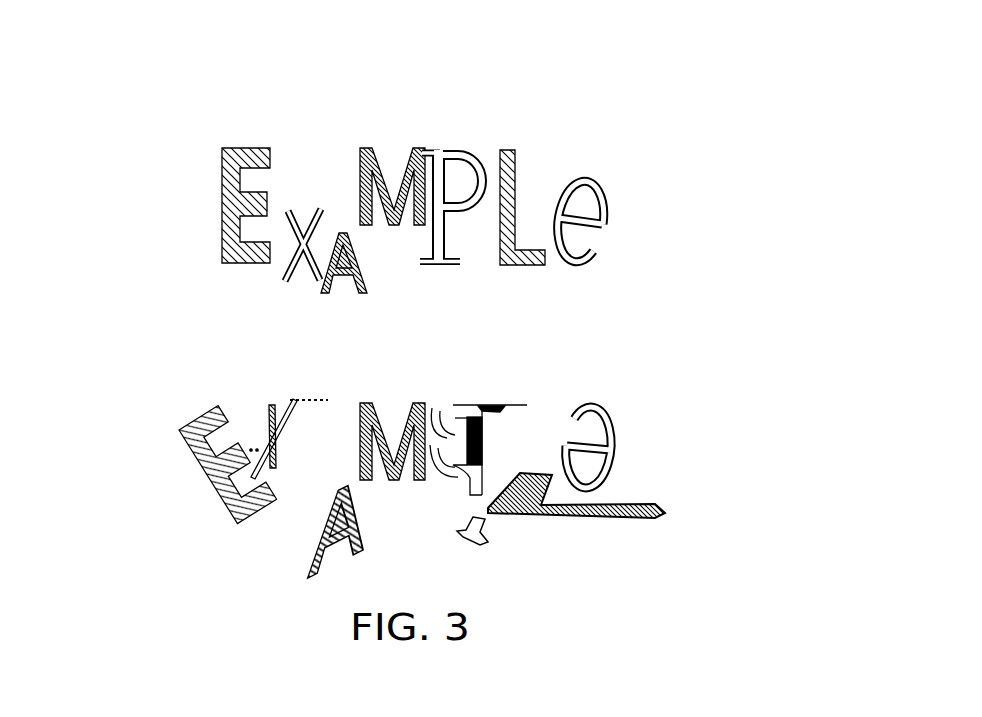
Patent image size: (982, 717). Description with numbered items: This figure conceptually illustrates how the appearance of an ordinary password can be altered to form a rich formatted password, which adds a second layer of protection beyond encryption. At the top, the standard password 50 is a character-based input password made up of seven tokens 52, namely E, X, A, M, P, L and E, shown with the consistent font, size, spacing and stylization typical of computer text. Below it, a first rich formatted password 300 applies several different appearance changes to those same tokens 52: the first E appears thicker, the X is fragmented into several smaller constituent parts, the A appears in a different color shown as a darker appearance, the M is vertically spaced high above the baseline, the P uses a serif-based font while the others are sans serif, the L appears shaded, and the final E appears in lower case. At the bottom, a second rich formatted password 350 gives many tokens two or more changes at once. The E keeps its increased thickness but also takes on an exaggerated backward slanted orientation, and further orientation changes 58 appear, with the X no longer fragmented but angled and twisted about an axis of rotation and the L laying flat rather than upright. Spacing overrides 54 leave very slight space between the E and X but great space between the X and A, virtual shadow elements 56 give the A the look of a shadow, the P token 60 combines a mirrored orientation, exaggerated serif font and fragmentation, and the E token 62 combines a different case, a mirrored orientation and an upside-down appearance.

The standard password 50 is at (176, 88).
The tokens 52 is at (297, 42).
The rich formatted password 300 is at (205, 262).
The rich formatted password 350 is at (195, 502).
The spacing overrides 54 is at (252, 442).
The virtual shadow elements 56 is at (298, 567).
The orientation changes 58 is at (202, 395).
The P token 60 is at (457, 495).
The E token 62 is at (622, 437).